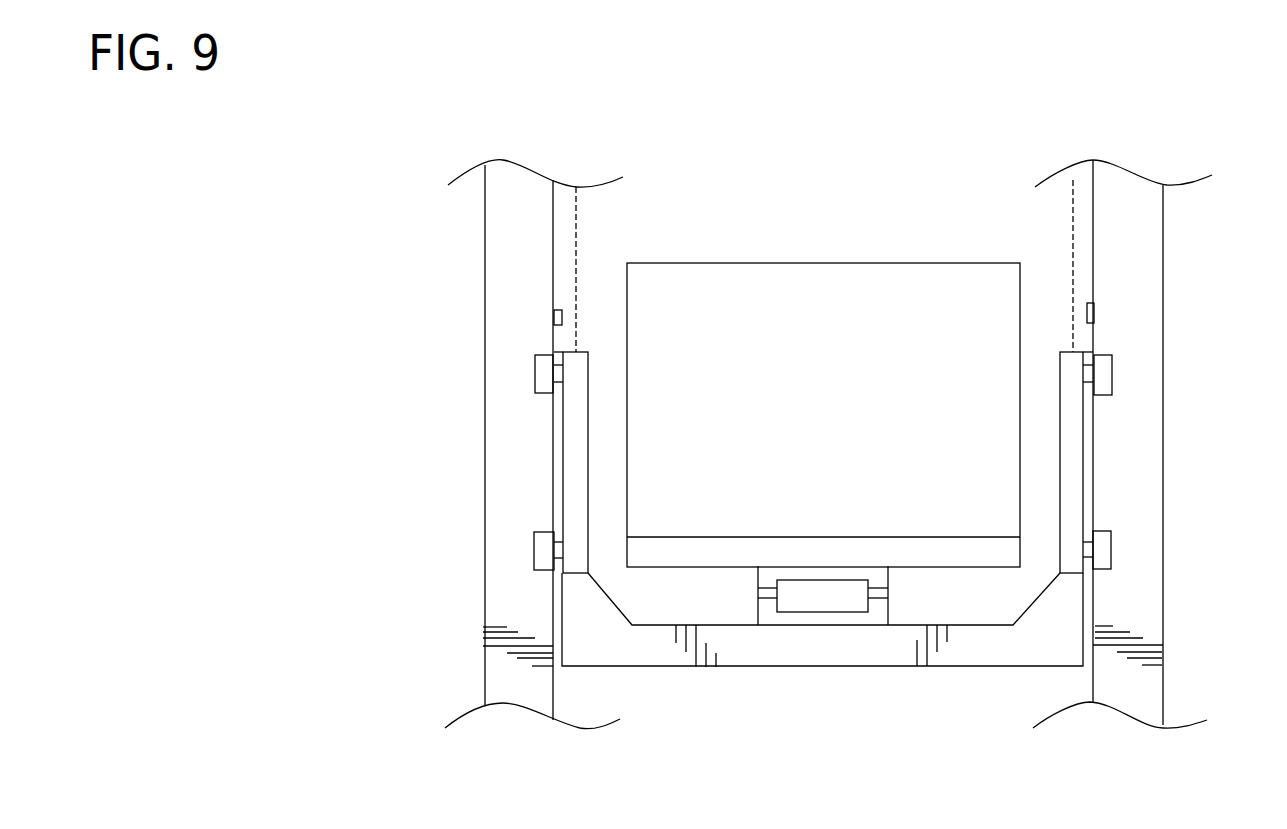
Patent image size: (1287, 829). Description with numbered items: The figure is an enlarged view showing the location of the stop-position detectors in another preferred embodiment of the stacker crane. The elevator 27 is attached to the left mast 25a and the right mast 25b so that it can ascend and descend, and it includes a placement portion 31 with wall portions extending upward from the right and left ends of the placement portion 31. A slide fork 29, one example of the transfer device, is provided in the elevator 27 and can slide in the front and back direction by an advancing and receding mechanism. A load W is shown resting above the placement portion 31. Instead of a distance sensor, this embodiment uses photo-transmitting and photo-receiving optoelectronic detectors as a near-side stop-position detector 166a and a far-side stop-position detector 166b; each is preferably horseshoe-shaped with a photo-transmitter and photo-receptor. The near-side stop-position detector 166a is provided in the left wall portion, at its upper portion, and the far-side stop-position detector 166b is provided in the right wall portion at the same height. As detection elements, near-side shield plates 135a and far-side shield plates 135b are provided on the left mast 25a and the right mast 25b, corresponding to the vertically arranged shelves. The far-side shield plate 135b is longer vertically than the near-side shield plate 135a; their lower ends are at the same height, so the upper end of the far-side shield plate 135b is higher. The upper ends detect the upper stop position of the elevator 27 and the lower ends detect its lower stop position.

The workpiece W is at (817, 363).
The left mast 25a is at (488, 235).
The right mast 25b is at (1145, 342).
The near-side stop-position detector 166a is at (555, 347).
The far-side stop-position detector 166b is at (1092, 352).
The near-side shield plate 135a is at (558, 310).
The far-side shield plate 135b is at (1087, 305).
The elevator 27 is at (903, 668).
The placement portion 31 is at (745, 648).
The slide fork 29 is at (825, 572).